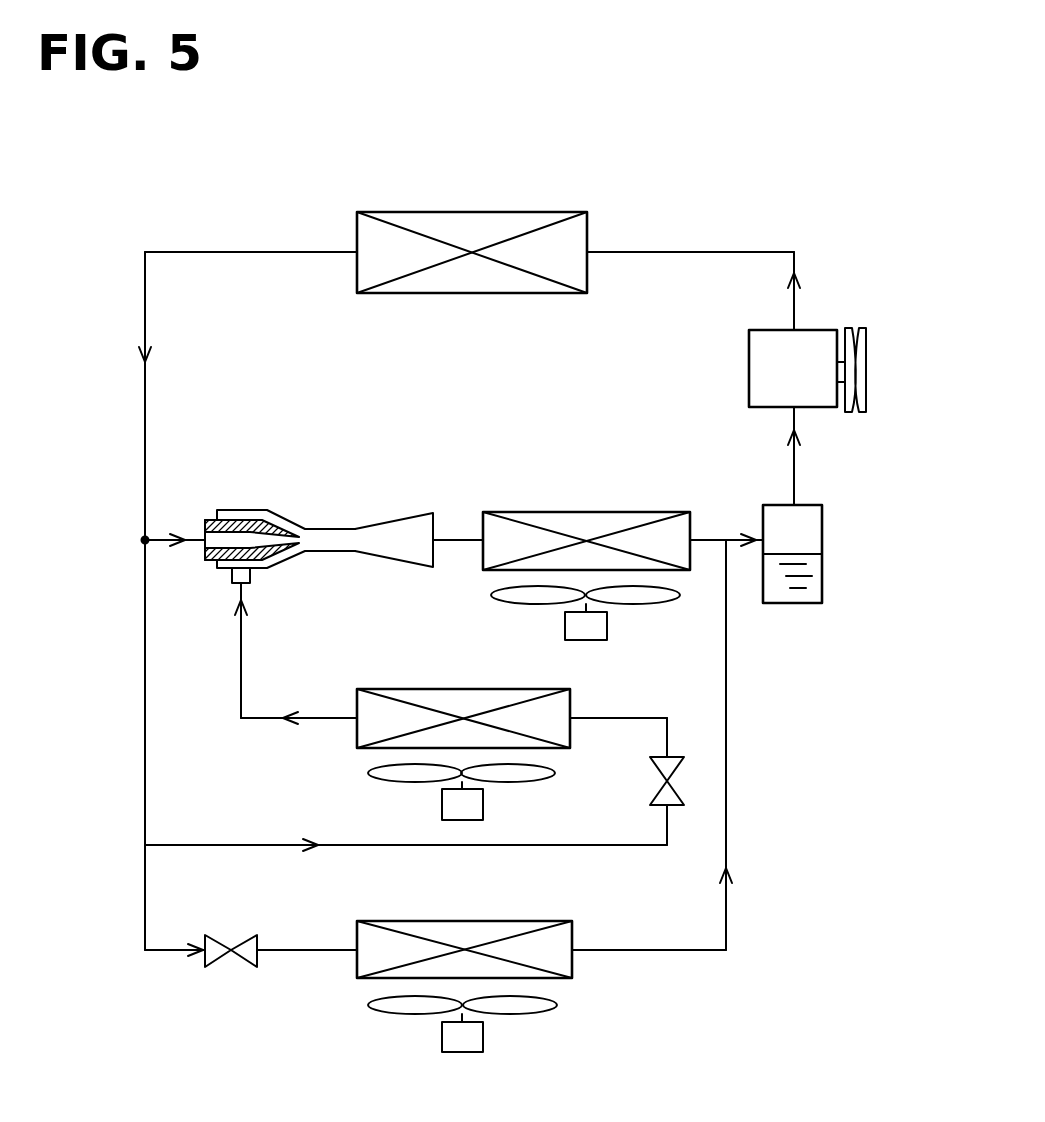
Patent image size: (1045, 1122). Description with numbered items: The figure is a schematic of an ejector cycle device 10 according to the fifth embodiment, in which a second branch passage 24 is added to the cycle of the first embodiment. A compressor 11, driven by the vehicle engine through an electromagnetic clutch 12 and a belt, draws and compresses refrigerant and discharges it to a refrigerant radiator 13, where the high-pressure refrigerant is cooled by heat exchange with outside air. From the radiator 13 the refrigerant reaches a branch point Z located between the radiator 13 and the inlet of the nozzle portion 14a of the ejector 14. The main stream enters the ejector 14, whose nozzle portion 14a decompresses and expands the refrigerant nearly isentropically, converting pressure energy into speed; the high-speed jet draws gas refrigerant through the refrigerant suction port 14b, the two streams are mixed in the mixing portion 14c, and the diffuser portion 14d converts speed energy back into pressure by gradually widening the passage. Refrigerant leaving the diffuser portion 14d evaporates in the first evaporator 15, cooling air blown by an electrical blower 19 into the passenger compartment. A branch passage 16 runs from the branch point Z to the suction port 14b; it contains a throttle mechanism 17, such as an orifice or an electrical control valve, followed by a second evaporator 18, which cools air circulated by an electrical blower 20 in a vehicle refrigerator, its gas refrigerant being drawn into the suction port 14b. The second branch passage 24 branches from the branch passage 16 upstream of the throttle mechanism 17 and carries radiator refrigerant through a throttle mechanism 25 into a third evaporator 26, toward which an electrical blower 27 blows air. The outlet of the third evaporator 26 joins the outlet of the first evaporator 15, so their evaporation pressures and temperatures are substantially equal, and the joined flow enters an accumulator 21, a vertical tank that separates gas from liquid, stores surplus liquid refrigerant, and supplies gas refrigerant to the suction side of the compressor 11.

The ejector cycle device 10 is at (669, 220).
The compressor 11 is at (822, 330).
The electromagnetic clutch 12 is at (866, 330).
The refrigerant radiator 13 is at (540, 212).
The ejector 14 is at (303, 537).
The nozzle portion 14a is at (264, 522).
The refrigerant suction port 14b is at (232, 580).
The mixing portion 14c is at (335, 536).
The diffuser portion 14d is at (424, 528).
The first evaporator 15 is at (648, 512).
The branch passage 16 is at (228, 848).
The throttle mechanism 17 is at (672, 757).
The second evaporator 18 is at (402, 689).
The electrical blower 19 is at (680, 597).
The electrical blower 20 is at (555, 775).
The accumulator 21 is at (823, 528).
The second branch passage 24 is at (160, 953).
The throttle mechanism 25 is at (258, 953).
The third evaporator 26 is at (400, 921).
The electrical blower 27 is at (555, 1008).
The branch point Z is at (142, 540).